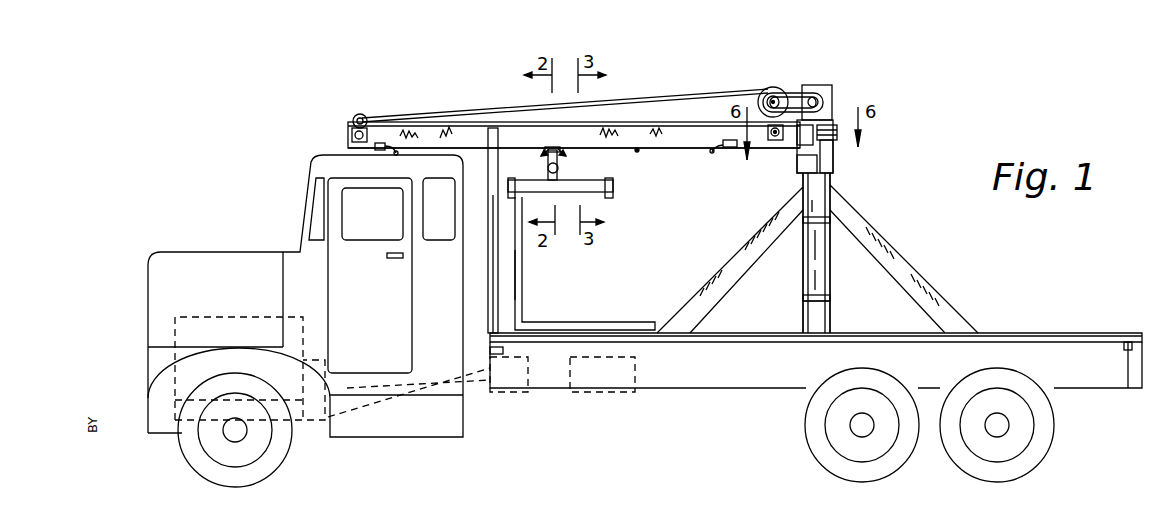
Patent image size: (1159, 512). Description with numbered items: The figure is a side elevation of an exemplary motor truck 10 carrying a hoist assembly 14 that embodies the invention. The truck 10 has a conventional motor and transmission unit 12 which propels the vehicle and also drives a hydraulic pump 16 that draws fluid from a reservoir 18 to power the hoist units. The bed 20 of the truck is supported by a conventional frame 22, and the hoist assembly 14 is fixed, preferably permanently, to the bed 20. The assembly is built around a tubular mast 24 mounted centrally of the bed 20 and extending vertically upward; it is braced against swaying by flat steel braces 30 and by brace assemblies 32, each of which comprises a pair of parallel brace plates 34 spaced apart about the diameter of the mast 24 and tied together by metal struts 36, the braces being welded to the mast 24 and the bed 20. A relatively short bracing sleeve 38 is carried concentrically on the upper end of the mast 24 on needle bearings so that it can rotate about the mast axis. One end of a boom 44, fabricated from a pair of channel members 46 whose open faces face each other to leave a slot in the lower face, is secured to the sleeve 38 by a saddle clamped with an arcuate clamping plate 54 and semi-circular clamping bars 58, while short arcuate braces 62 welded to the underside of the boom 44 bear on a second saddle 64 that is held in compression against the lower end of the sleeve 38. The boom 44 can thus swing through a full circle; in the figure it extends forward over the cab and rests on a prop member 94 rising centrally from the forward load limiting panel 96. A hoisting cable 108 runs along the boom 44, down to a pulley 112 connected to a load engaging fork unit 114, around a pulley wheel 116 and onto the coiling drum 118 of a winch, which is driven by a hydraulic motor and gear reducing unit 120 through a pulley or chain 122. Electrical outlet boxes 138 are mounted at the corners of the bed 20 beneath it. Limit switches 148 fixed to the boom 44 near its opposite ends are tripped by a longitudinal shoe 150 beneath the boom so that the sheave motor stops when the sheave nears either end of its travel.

The motor truck 10 is at (442, 440).
The motor and transmission unit 12 is at (175, 330).
The hoist assembly 14 is at (830, 181).
The hydraulic pump 16 is at (518, 383).
The reservoir 18 is at (588, 383).
The bed 20 is at (1040, 333).
The frame 22 is at (775, 387).
The tubular mast 24 is at (813, 247).
The braces 30 is at (733, 267).
The brace assemblies 32 is at (830, 297).
The brace plates 34 is at (805, 270).
The metal struts 36 is at (817, 217).
The bracing sleeve 38 is at (833, 157).
The boom 44 is at (637, 151).
The channel members 46 is at (632, 133).
The clamping plate 54 is at (837, 130).
The clamping bars 58 is at (837, 140).
The arcuate braces 62 is at (790, 153).
The saddle 64 is at (805, 168).
The prop member 94 is at (493, 167).
The forward load limiting panel 96 is at (493, 260).
The hoisting cable 108 is at (617, 100).
The pulley 112 is at (560, 168).
The fork unit 114 is at (524, 292).
The pulley wheel 116 is at (360, 114).
The coiling drum 118 is at (768, 93).
The hydraulic motor and gear reducing unit 120 is at (820, 90).
The pulley or chain 122 is at (793, 95).
The outlet boxes 138 is at (495, 355).
The limit switches 148 is at (380, 142).
The shoe 150 is at (550, 148).